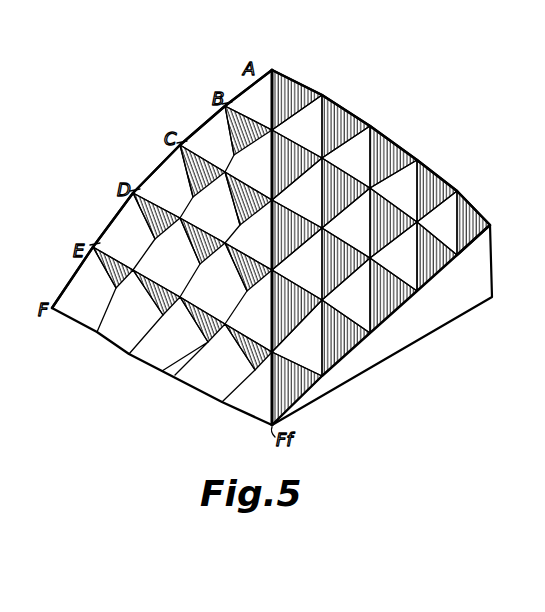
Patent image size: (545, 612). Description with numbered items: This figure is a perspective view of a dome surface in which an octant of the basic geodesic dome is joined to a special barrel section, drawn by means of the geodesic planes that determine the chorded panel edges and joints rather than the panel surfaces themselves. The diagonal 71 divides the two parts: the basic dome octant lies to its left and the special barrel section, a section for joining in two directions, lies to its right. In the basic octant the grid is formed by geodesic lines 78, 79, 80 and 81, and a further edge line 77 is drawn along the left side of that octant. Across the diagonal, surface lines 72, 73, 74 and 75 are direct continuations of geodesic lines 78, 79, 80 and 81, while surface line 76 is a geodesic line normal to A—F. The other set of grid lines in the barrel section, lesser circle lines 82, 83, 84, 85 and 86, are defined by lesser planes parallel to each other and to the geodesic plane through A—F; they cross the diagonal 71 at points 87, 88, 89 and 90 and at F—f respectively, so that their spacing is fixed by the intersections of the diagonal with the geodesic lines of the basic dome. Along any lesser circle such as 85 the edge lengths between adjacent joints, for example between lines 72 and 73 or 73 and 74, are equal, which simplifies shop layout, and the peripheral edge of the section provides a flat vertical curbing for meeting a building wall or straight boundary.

The diagonal 71 is at (282, 42).
The surface line 72 is at (308, 365).
The surface line 73 is at (343, 330).
The surface line 74 is at (392, 298).
The surface line 75 is at (438, 262).
The geodesic line 76 is at (492, 211).
The edge segment 77 is at (68, 310).
The geodesic line 78 is at (107, 250).
The geodesic line 79 is at (146, 194).
The geodesic line 80 is at (190, 148).
The geodesic line 81 is at (234, 110).
The lesser circle line 82 is at (320, 98).
The lesser circle line 83 is at (369, 129).
The lesser circle line 84 is at (421, 152).
The lesser circle line 85 is at (460, 184).
The lesser circle line 86 is at (480, 236).
The intersection point 87 is at (268, 135).
The intersection point 88 is at (269, 205).
The intersection point 89 is at (269, 275).
The intersection point 90 is at (263, 367).